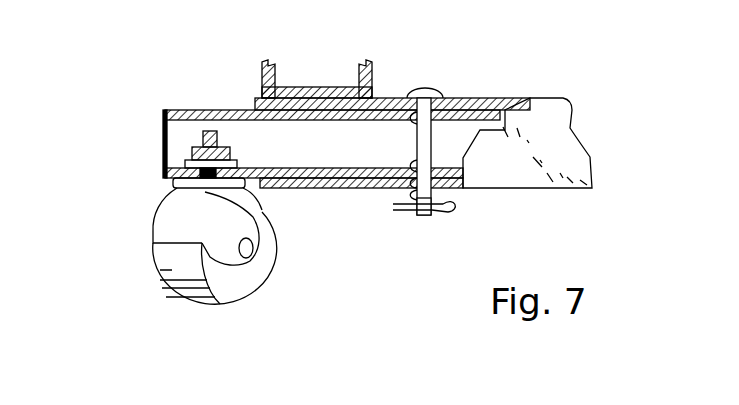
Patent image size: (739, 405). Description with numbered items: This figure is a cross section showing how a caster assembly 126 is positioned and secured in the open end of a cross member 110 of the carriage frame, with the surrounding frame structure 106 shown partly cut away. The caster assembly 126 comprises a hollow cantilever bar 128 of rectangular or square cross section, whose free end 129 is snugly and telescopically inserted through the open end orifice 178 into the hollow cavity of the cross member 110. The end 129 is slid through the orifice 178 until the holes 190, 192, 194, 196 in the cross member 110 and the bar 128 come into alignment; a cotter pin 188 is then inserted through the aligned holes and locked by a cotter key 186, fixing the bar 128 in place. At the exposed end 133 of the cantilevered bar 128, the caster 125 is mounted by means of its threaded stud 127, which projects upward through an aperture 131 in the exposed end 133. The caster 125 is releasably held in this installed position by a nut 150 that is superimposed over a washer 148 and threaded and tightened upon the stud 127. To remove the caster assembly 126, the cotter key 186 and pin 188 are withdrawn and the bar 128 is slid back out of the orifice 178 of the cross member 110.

The frame member 106 is at (319, 97).
The cross member 110 is at (453, 97).
The caster 125 is at (199, 236).
The caster assembly 126 is at (157, 218).
The threaded stud 127 is at (220, 133).
The cantilever bar 128 is at (192, 104).
The free end 129 is at (513, 100).
The aperture 131 is at (253, 202).
The exposed end 133 is at (165, 110).
The washer 148 is at (183, 162).
The nut 150 is at (198, 152).
The orifice 178 is at (258, 106).
The cotter key 186 is at (436, 210).
The cotter pin 188 is at (423, 218).
The hole 190 is at (397, 195).
The hole 192 is at (432, 88).
The hole 194 is at (417, 123).
The hole 196 is at (417, 160).